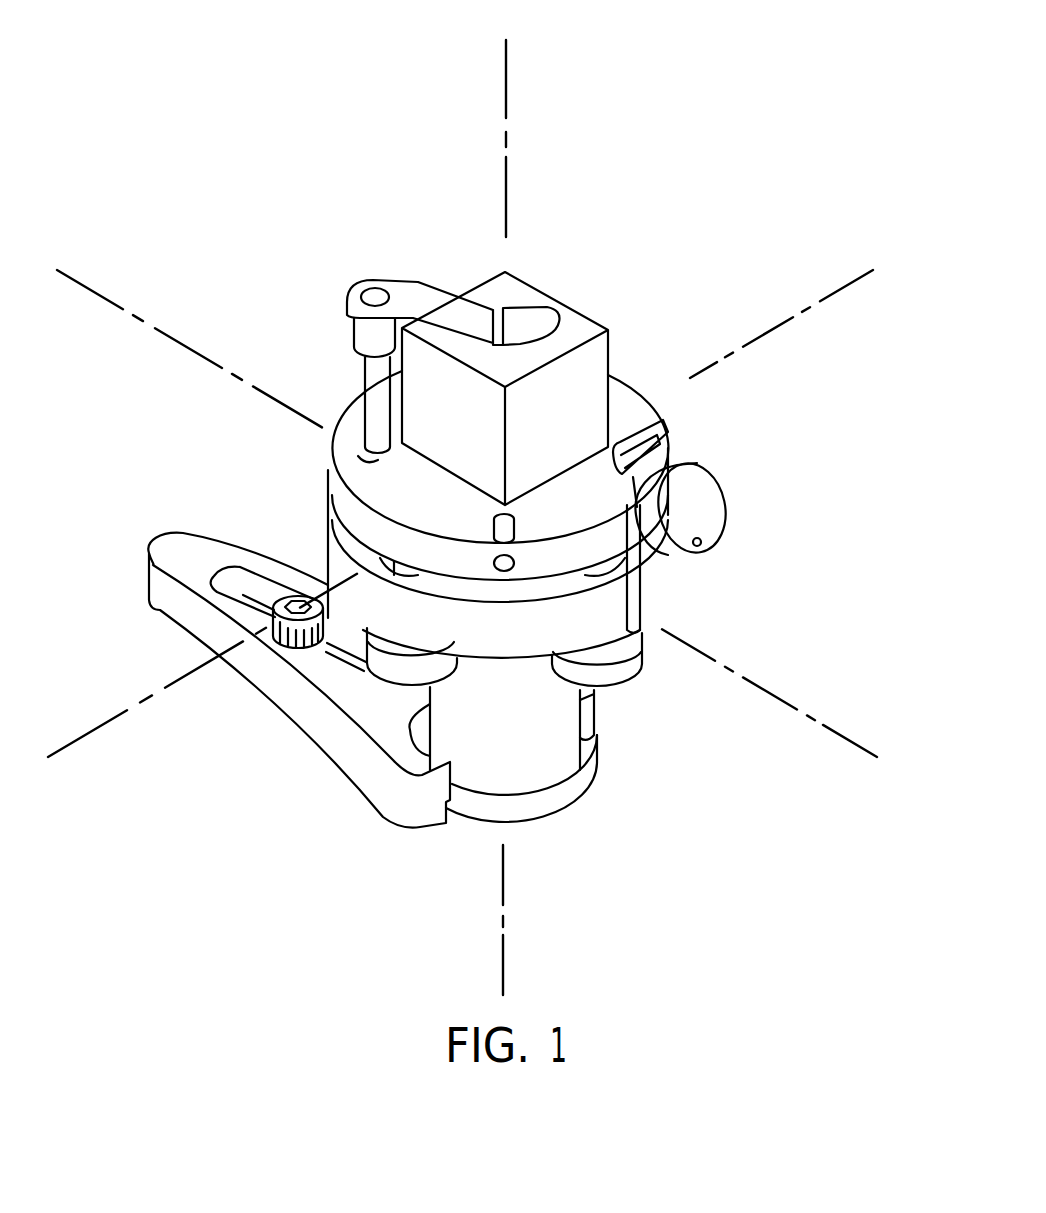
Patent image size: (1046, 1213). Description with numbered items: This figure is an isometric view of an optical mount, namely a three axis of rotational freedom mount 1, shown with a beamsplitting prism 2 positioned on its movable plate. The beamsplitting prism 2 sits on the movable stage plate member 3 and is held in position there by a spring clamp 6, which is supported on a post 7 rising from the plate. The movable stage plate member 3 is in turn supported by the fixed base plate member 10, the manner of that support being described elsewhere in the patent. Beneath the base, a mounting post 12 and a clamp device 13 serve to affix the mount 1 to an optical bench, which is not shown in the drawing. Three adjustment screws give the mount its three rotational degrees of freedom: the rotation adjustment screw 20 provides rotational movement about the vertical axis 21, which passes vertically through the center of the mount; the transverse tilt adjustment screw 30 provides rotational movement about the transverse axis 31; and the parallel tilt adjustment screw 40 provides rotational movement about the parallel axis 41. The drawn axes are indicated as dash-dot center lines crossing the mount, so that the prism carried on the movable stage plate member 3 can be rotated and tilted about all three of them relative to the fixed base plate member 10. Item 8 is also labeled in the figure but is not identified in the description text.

The three axis of rotational freedom mount 1 is at (707, 133).
The beamsplitting prism 2 is at (518, 388).
The movable stage plate member 3 is at (509, 480).
The spring clamp 6 is at (453, 291).
The post 7 is at (350, 385).
The bore 8 is at (321, 471).
The fixed base plate member 10 is at (443, 584).
The mounting post 12 is at (538, 770).
The clamp device 13 is at (299, 680).
The rotation adjustment screw 20 is at (704, 526).
The vertical axis 21 is at (542, 517).
The transverse tilt adjustment screw 30 is at (622, 686).
The transverse axis 31 is at (460, 502).
The parallel tilt adjustment screw 40 is at (359, 708).
The parallel axis 41 is at (467, 513).